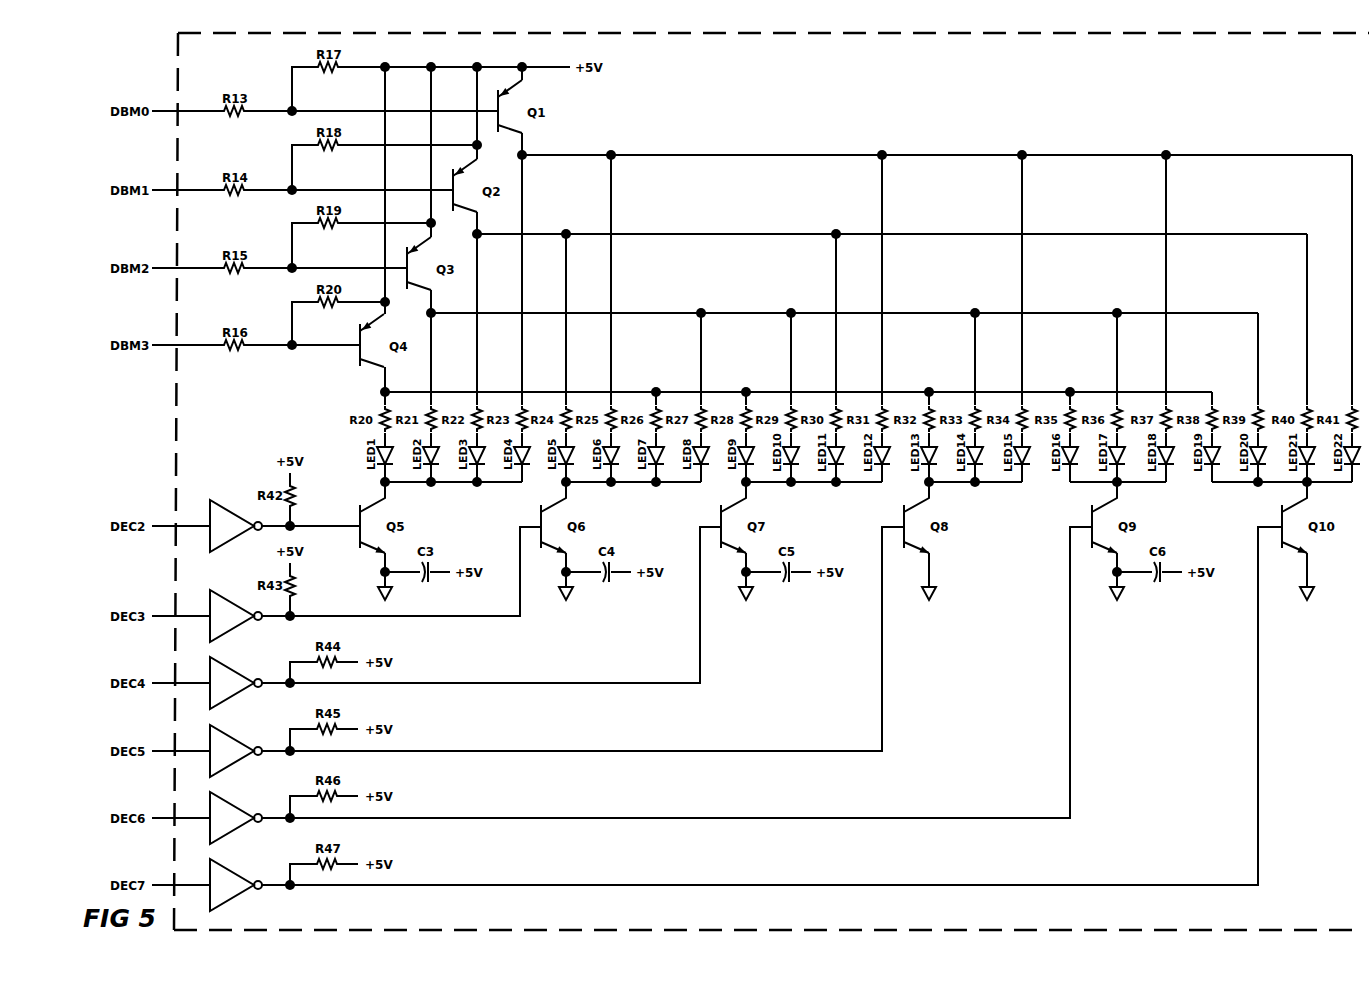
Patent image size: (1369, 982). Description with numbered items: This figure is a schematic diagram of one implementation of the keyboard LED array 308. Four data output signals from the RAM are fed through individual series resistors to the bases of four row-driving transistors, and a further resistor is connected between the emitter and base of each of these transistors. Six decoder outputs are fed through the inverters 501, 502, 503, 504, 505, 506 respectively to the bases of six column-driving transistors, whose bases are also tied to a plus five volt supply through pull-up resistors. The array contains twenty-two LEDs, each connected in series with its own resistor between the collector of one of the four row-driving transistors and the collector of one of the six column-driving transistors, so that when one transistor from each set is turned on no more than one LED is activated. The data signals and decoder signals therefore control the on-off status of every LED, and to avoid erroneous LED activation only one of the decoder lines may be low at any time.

The keyboard LED array 308 is at (658, 930).
The inverter 501 is at (210, 503).
The inverter 502 is at (210, 602).
The inverter 503 is at (247, 668).
The inverter 504 is at (247, 737).
The inverter 505 is at (247, 804).
The inverter 506 is at (245, 871).